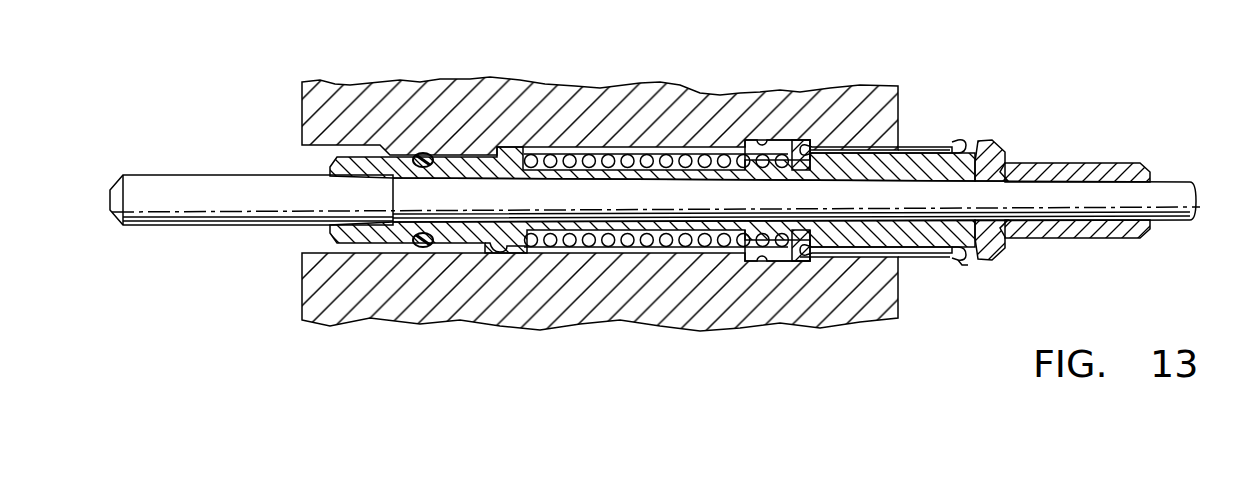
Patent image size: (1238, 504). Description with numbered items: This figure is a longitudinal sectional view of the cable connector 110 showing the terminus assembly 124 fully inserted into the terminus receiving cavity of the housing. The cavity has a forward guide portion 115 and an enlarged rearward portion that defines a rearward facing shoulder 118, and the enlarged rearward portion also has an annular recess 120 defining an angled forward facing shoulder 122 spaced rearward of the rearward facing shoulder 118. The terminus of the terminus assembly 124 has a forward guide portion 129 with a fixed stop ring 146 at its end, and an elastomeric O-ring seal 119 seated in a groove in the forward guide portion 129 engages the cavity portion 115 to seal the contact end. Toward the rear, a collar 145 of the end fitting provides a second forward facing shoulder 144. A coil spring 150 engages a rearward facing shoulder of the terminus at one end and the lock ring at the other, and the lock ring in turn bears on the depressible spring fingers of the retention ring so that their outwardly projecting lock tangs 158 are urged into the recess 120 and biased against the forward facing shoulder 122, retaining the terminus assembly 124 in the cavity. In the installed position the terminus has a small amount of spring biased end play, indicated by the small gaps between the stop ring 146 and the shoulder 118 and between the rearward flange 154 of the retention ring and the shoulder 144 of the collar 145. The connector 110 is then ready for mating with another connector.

The cable connector 110 is at (292, 74).
The forward guide portion 115 is at (455, 245).
The rearward facing shoulder 118 is at (498, 253).
The O-ring seal 119 is at (423, 154).
The annular recess 120 is at (758, 139).
The forward facing shoulder 122 is at (804, 146).
The terminus assembly 124 is at (1109, 162).
The forward guide portion 129 is at (383, 243).
The second forward facing shoulder 144 is at (968, 262).
The collar 145 is at (977, 148).
The stop ring 146 is at (520, 248).
The coil spring 150 is at (610, 150).
The rearward flange 154 is at (955, 264).
The lock tangs 158 is at (797, 255).